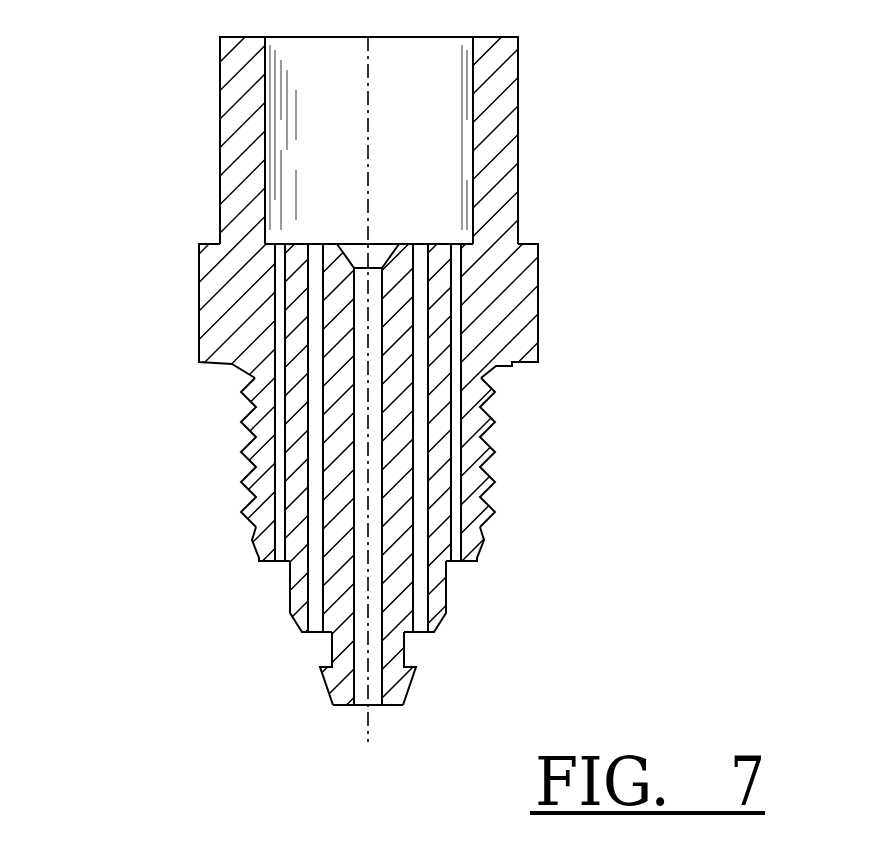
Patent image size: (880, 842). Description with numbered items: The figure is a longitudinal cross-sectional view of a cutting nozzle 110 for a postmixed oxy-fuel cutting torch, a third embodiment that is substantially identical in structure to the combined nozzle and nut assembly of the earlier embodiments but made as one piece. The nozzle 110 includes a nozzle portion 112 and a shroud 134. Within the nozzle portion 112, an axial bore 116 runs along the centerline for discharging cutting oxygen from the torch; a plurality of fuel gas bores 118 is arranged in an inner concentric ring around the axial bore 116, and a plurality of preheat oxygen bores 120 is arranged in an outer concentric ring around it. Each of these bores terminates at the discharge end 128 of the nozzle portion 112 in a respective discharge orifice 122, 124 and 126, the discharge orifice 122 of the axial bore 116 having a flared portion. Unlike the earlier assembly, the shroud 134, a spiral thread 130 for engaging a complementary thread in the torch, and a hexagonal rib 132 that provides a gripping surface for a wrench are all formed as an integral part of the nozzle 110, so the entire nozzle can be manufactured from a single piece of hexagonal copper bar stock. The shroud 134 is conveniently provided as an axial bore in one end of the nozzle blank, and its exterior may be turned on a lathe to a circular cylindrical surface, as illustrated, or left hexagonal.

The cutting nozzle 110 is at (440, 421).
The nozzle portion 112 is at (440, 532).
The axial bore 116 is at (430, 720).
The fuel gas bores 118 is at (362, 668).
The preheat oxygen bores 120 is at (367, 596).
The discharge orifice 122 is at (485, 394).
The discharge orifice 124 is at (371, 362).
The discharge orifice 126 is at (380, 343).
The discharge end 128 is at (297, 158).
The spiral thread 130 is at (444, 452).
The hexagonal rib 132 is at (449, 298).
The shroud 134 is at (430, 122).